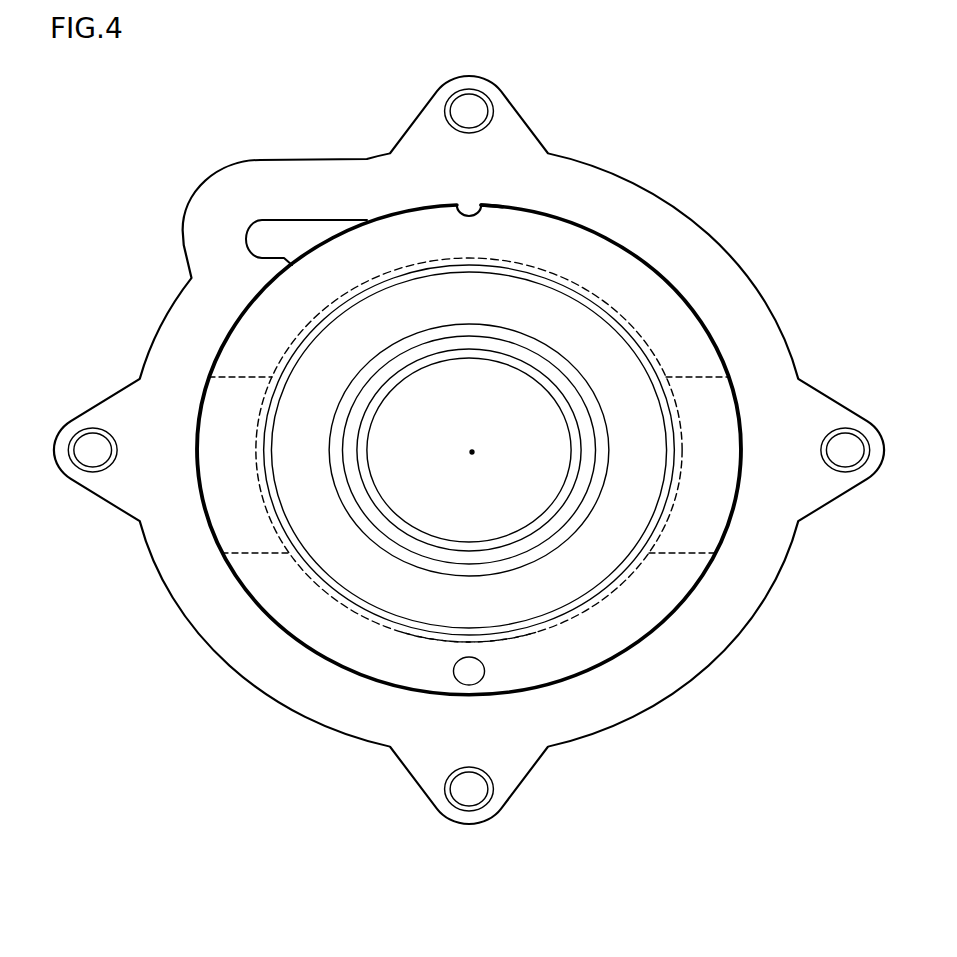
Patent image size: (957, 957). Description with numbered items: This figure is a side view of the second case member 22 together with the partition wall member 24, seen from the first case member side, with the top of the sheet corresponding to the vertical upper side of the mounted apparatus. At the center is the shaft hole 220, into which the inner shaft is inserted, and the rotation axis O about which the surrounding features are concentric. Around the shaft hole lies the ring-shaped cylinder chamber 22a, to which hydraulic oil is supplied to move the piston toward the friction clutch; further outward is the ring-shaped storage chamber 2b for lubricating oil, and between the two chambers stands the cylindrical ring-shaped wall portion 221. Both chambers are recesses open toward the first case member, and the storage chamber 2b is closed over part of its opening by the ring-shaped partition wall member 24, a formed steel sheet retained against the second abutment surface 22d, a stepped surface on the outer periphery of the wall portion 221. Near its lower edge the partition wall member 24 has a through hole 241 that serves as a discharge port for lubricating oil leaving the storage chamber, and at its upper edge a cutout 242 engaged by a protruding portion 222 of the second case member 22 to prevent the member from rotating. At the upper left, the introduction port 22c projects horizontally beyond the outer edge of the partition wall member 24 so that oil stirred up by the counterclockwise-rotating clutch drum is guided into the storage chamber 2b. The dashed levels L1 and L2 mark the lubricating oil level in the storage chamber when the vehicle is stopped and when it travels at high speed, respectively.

The second case member 22 is at (603, 168).
The cylinder chamber 22a is at (603, 357).
The introduction port 22c is at (250, 235).
The second abutment surface 22d is at (602, 595).
The partition wall member 24 is at (608, 273).
The shaft hole 220 is at (490, 396).
The ring-shaped wall portion 221 is at (620, 570).
The protruding portion 222 is at (470, 213).
The through hole 241 is at (476, 675).
The cutout 242 is at (462, 206).
The storage chamber 2b is at (705, 408).
The rotation axis O is at (472, 452).
The oil level when stopped L1 is at (259, 553).
The oil level at high speed L2 is at (250, 377).